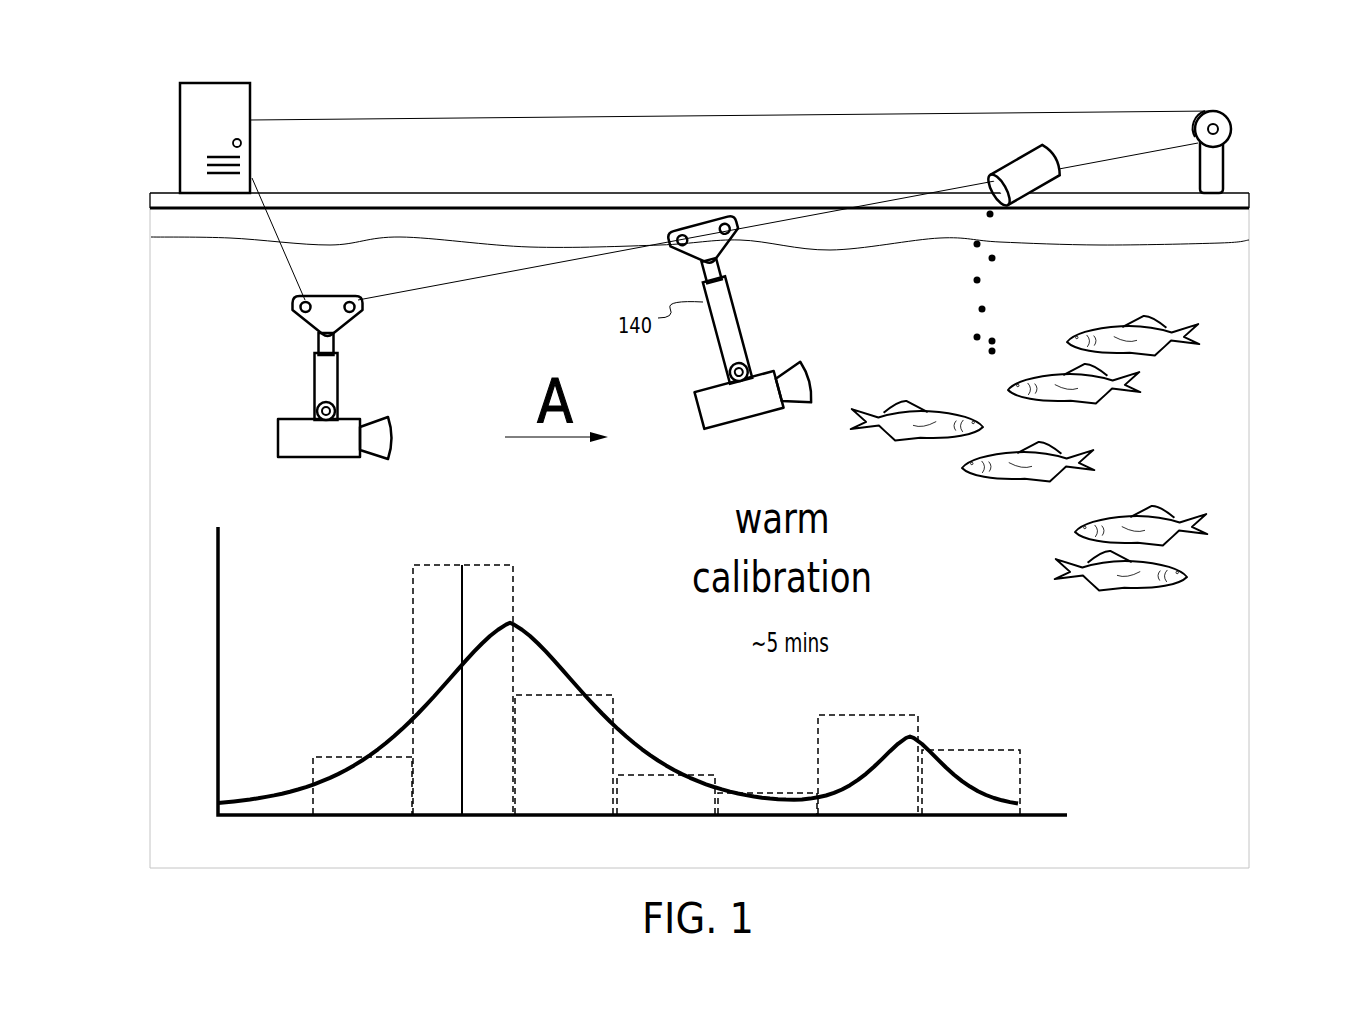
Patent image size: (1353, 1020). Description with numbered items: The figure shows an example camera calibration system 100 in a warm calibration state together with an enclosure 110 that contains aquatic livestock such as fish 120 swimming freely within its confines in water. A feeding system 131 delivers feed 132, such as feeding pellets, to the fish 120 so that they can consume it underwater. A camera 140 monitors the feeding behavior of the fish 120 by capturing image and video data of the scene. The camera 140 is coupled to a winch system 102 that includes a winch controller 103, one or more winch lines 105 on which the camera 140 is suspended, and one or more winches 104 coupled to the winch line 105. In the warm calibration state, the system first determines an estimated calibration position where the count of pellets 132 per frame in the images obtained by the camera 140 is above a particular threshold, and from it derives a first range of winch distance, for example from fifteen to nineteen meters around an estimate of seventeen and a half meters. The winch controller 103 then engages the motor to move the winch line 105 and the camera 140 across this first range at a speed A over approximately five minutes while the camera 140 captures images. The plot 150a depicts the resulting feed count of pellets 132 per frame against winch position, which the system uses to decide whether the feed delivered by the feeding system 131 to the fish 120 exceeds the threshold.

The camera calibration system 100 is at (1068, 48).
The winch system 102 is at (138, 108).
The winch controller 103 is at (228, 82).
The winch 104 is at (1230, 118).
The winch line 105 is at (668, 115).
The enclosure 110 is at (1251, 588).
The fish 120 is at (1075, 398).
The feeding system 131 is at (990, 175).
The feed 132 is at (975, 282).
The camera 140 is at (312, 371).
The plot 150a is at (335, 616).